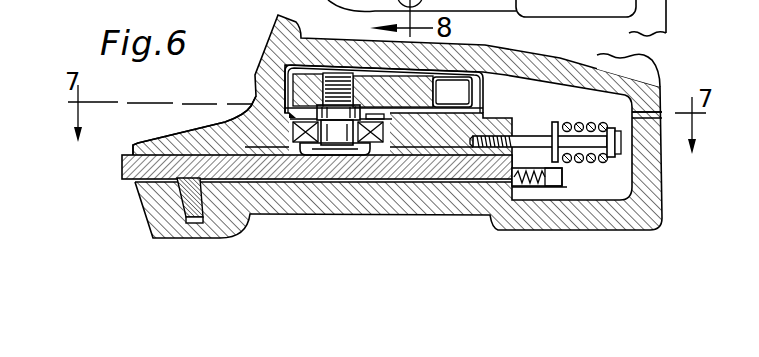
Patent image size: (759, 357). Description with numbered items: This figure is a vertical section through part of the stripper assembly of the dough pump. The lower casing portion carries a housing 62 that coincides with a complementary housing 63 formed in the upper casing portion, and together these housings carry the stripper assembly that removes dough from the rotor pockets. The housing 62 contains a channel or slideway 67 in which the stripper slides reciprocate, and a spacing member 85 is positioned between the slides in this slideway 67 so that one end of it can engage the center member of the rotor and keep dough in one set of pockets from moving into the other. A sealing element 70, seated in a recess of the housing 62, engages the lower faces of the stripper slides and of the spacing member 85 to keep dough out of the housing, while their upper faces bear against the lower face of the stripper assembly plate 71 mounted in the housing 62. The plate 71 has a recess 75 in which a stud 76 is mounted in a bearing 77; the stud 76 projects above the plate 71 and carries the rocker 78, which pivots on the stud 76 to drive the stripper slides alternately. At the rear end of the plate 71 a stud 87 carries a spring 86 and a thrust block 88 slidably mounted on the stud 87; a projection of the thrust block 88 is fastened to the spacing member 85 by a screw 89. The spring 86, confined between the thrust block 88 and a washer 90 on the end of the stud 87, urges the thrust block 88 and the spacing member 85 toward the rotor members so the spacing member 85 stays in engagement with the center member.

The housing 62 is at (663, 222).
The complementary housing 63 is at (662, 81).
The channel or slideway 67 is at (383, 183).
The sealing element 70 is at (178, 200).
The stripper assembly plate 71 is at (167, 143).
The recess 75 is at (313, 148).
The stud 76 is at (340, 80).
The bearing 77 is at (288, 109).
The rocker 78 is at (460, 86).
The spacing member 85 is at (122, 165).
The spring 86 is at (597, 162).
The stud 87 is at (525, 135).
The thrust block 88 is at (547, 126).
The screw 89 is at (562, 186).
The washer 90 is at (613, 160).